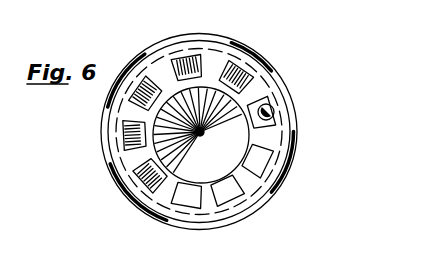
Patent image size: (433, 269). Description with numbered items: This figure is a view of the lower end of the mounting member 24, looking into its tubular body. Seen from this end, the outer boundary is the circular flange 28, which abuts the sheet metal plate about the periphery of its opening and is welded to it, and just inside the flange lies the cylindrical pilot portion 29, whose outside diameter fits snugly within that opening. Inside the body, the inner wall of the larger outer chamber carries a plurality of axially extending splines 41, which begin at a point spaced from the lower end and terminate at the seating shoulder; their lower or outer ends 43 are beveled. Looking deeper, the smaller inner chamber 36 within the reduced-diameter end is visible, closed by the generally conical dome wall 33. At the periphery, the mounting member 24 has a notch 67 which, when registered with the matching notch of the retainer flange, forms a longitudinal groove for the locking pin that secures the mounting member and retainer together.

The mounting member 24 is at (253, 45).
The circular flange 28 is at (157, 52).
The cylindrical pilot portion 29 is at (209, 53).
The conical dome wall 33 is at (227, 148).
The inner chamber 36 is at (249, 126).
The axially extending splines 41 is at (148, 132).
The lower ends of splines 43 is at (232, 188).
The notch 67 is at (272, 105).